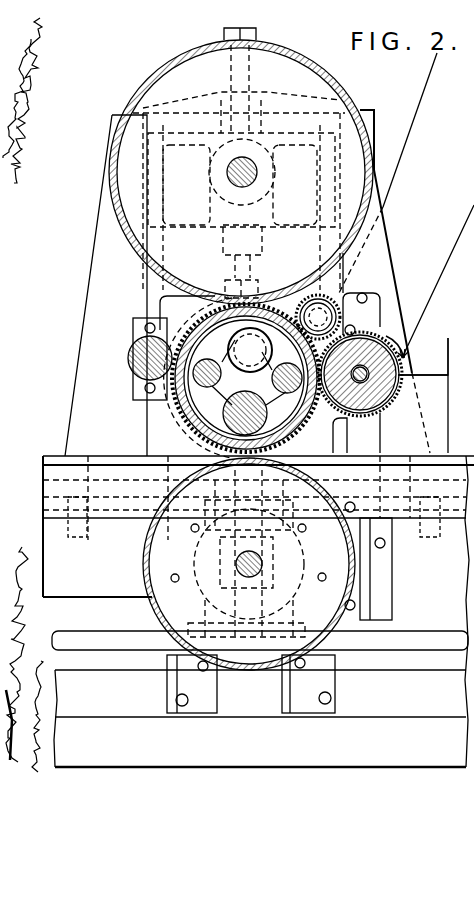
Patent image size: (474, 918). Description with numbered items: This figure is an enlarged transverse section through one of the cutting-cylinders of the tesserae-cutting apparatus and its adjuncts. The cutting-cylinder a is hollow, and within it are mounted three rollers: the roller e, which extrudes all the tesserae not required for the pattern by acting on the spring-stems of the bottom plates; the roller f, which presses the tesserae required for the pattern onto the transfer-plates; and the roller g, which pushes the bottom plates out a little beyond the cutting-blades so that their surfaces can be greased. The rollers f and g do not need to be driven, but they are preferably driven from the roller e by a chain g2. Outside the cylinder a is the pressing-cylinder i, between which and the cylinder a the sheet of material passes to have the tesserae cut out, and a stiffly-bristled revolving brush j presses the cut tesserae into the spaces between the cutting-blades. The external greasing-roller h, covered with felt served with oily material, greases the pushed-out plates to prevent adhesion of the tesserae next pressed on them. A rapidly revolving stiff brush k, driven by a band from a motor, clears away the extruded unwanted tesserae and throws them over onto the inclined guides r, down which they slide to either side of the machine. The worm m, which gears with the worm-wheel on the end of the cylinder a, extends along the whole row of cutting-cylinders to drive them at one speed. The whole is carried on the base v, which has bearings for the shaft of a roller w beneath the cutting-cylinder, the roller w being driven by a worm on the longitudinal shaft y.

The pressing-cylinder i is at (342, 98).
The stiffly-bristled revolving brush j is at (339, 292).
The internal roller g is at (240, 350).
The cutting-cylinder a is at (217, 377).
The internal roller e is at (279, 379).
The internal roller f is at (245, 413).
The chain g2 is at (200, 405).
The external greasing-roller h is at (140, 359).
The revolving brush k is at (384, 402).
The inclined guides r is at (423, 372).
The worm m is at (249, 564).
The base v is at (393, 569).
The roller w is at (345, 607).
The longitudinal shaft y is at (260, 643).